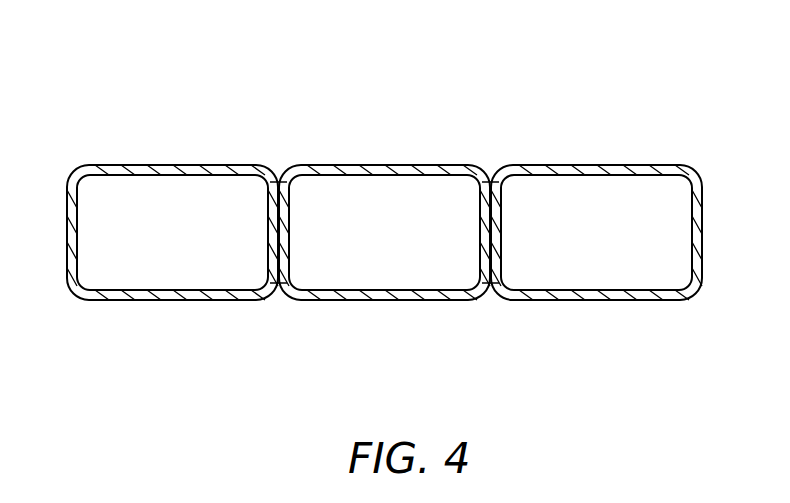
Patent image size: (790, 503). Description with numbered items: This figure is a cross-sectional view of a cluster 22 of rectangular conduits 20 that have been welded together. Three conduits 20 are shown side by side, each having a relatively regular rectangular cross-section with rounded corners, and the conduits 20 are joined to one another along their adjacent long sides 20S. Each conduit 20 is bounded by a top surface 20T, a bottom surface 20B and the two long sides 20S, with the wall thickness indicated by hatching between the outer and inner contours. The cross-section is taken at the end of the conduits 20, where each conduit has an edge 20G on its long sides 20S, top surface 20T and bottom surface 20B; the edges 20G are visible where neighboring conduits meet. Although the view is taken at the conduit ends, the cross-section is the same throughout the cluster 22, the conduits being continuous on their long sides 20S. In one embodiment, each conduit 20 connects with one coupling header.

The cluster 22 is at (581, 98).
The conduit 20 is at (124, 253).
The top surface 20T is at (368, 168).
The bottom surface 20B is at (397, 300).
The long side 20S is at (500, 230).
The edge 20G is at (307, 168).